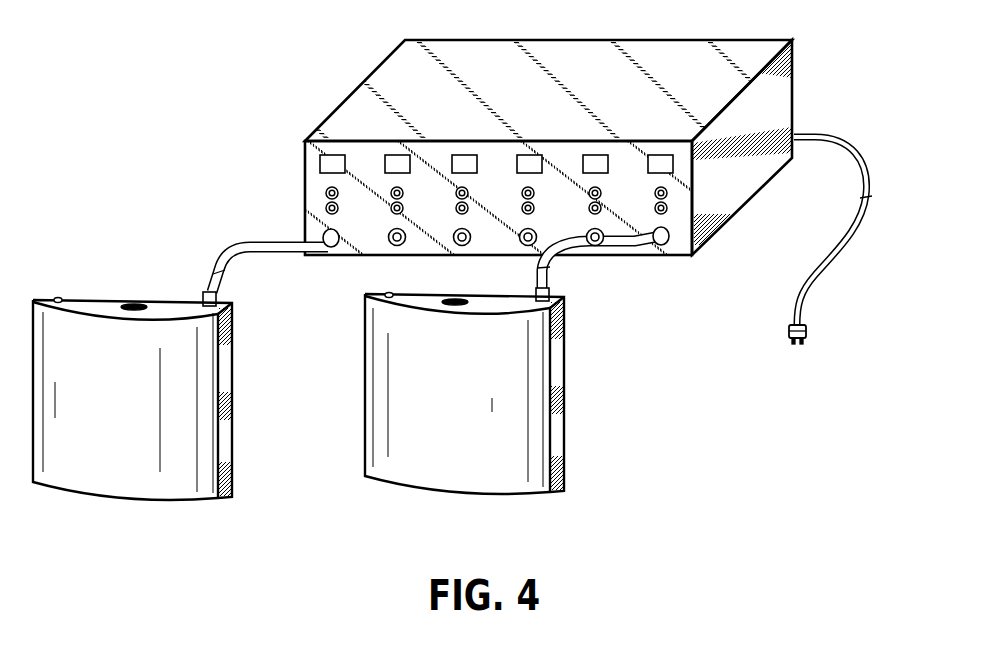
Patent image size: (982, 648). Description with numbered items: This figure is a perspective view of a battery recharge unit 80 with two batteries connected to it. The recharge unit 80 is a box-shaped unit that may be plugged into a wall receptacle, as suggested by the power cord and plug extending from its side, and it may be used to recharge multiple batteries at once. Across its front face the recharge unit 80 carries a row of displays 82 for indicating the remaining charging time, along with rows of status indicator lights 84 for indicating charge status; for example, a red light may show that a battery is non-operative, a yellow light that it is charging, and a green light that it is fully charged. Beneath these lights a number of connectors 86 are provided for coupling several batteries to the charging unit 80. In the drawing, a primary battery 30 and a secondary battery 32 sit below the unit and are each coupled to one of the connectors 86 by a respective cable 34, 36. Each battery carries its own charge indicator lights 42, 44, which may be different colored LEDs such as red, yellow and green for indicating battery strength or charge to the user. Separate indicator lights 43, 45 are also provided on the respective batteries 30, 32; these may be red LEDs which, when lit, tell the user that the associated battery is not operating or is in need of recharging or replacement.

The battery recharge unit 80 is at (661, 36).
The display 82 is at (320, 162).
The status indicator lights 84 is at (325, 193).
The connectors 86 is at (320, 232).
The cable 34 is at (229, 247).
The cable 36 is at (553, 263).
The primary battery 30 is at (238, 409).
The secondary battery 32 is at (571, 420).
The charge indicator lights 42 is at (130, 303).
The indicator light 43 is at (56, 296).
The charge indicator lights 44 is at (457, 299).
The indicator light 45 is at (386, 292).